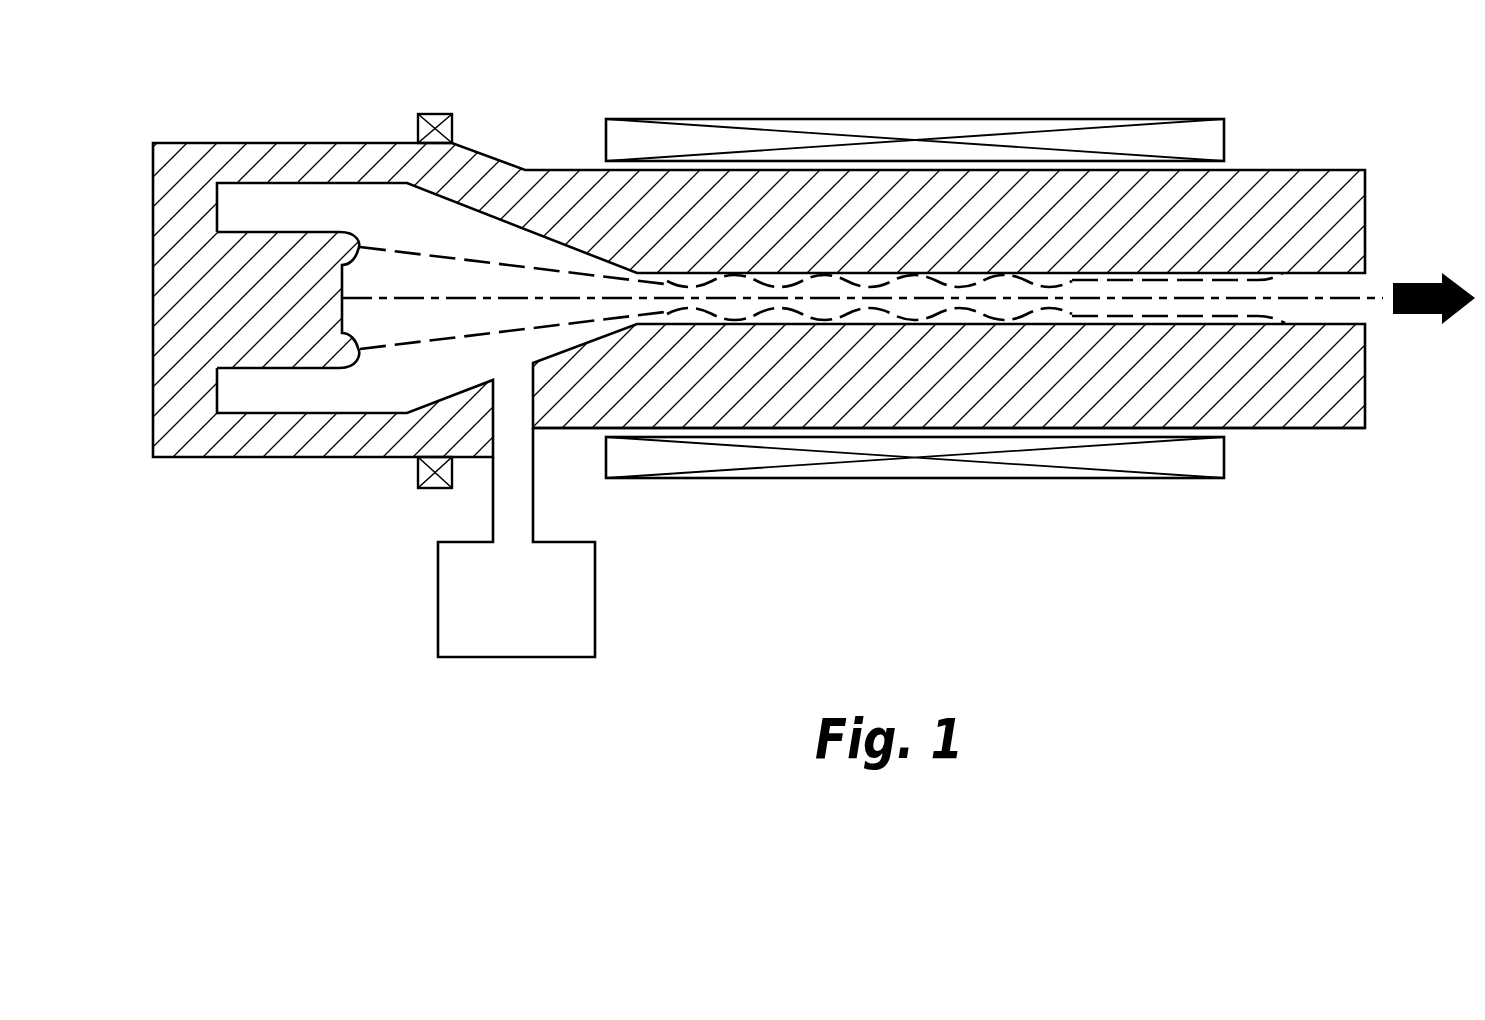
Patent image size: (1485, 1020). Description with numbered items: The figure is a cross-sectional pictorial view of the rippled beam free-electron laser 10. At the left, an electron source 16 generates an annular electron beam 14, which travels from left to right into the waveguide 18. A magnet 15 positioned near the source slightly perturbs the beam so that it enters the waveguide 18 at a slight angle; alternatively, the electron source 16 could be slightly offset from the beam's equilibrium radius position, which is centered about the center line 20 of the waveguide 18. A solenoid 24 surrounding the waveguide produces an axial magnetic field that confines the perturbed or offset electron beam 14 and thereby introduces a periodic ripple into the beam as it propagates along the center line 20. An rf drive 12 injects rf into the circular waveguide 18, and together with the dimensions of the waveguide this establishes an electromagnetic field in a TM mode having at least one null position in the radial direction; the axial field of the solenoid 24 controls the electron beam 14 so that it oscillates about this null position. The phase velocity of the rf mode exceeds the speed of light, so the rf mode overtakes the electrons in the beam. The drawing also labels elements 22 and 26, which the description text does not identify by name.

The rippled beam free-electron laser 10 is at (950, 98).
The rf drive 12 is at (483, 650).
The annular electron beam 14 is at (530, 264).
The magnet 15 is at (437, 114).
The electron source 16 is at (270, 370).
The waveguide 18 is at (992, 412).
The center line 20 is at (1335, 297).
The conductive wall 22 is at (802, 223).
The solenoid 24 is at (1175, 132).
The output beam direction 26 is at (1422, 278).